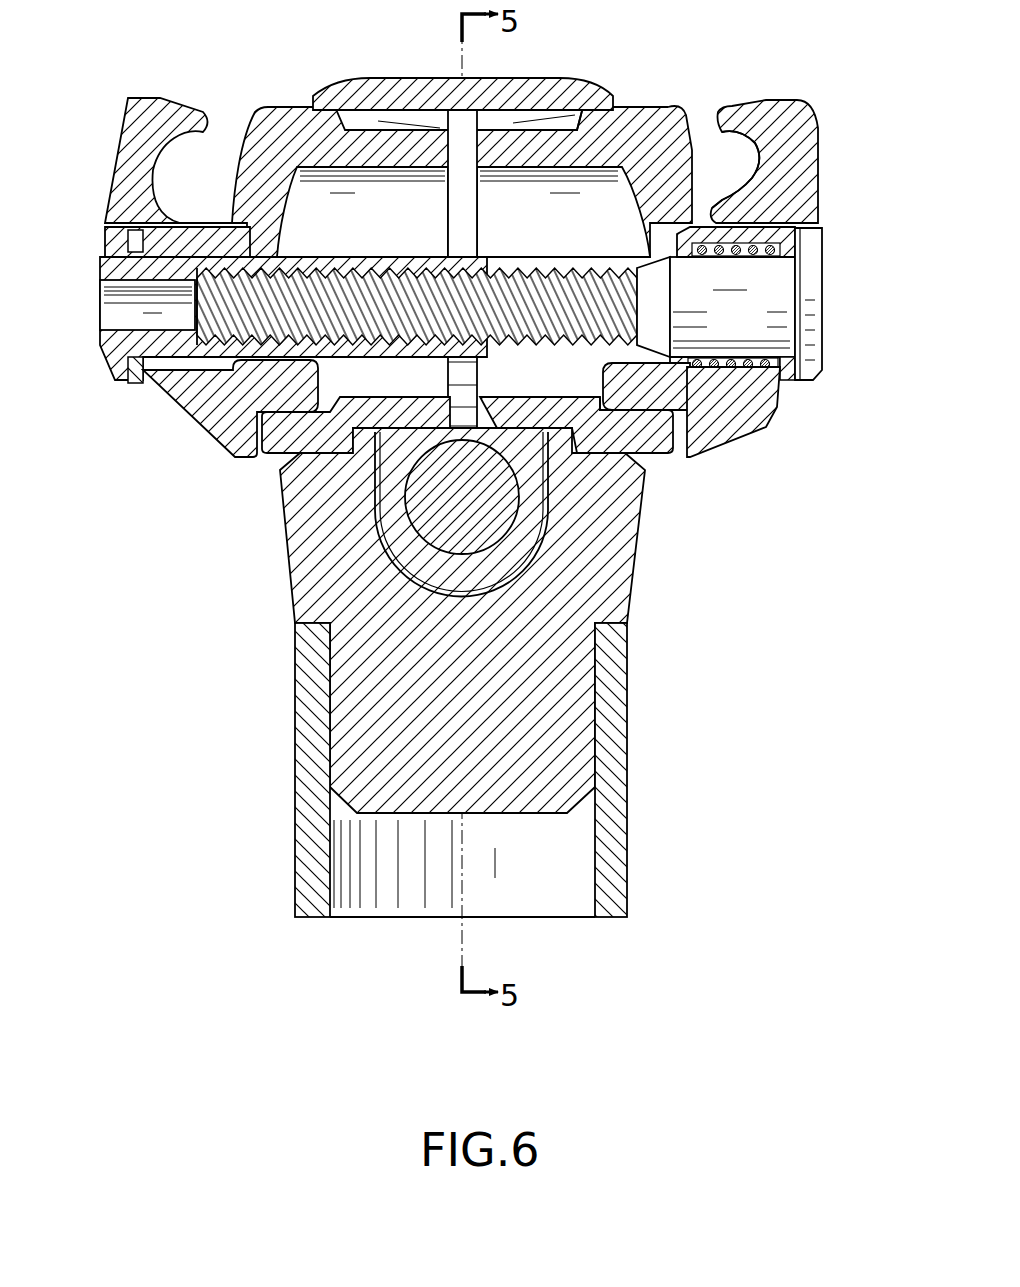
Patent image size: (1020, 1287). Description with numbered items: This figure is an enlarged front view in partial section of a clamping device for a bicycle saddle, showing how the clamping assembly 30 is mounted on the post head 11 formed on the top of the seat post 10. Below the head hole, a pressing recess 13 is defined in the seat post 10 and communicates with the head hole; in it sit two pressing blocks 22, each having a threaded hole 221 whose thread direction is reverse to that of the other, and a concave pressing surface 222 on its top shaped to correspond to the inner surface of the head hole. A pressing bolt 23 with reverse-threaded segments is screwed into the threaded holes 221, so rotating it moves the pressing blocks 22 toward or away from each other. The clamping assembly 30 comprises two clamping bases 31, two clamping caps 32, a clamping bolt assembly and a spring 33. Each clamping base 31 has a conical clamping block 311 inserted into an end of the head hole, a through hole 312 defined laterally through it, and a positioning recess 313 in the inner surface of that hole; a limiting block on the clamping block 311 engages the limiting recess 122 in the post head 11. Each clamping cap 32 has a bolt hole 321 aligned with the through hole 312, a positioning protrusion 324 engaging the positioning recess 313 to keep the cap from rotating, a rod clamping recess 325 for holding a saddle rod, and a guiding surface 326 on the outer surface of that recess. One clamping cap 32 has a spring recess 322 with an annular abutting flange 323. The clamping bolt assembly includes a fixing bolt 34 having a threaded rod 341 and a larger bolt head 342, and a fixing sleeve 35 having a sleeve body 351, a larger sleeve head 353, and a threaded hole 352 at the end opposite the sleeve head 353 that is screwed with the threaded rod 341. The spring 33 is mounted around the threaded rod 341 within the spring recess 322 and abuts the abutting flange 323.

The seat post 10 is at (664, 799).
The post head 11 is at (368, 98).
The pressing recess 13 is at (516, 557).
The pressing block 22 is at (419, 556).
The pressing bolt 23 is at (431, 511).
The clamping assembly 30 is at (784, 464).
The clamping base 31 is at (642, 88).
The clamping cap 32 is at (714, 453).
The spring 33 is at (731, 369).
The fixing bolt 34 is at (824, 243).
The fixing sleeve 35 is at (103, 353).
The limiting recess 122 is at (425, 118).
The threaded hole 221 is at (495, 473).
The concave pressing surface 222 is at (407, 421).
The clamping block 311 is at (540, 138).
The through hole 312 is at (548, 229).
The positioning recess 313 is at (600, 406).
The bolt hole 321 is at (678, 355).
The spring recess 322 is at (730, 256).
The annular abutting flange 323 is at (782, 370).
The positioning protrusion 324 is at (628, 394).
The rod clamping recess 325 is at (764, 166).
The guiding surface 326 is at (750, 104).
The threaded rod 341 is at (583, 290).
The bolt head 342 is at (801, 326).
The sleeve body 351 is at (327, 263).
The threaded hole 352 is at (393, 290).
The sleeve head 353 is at (137, 376).